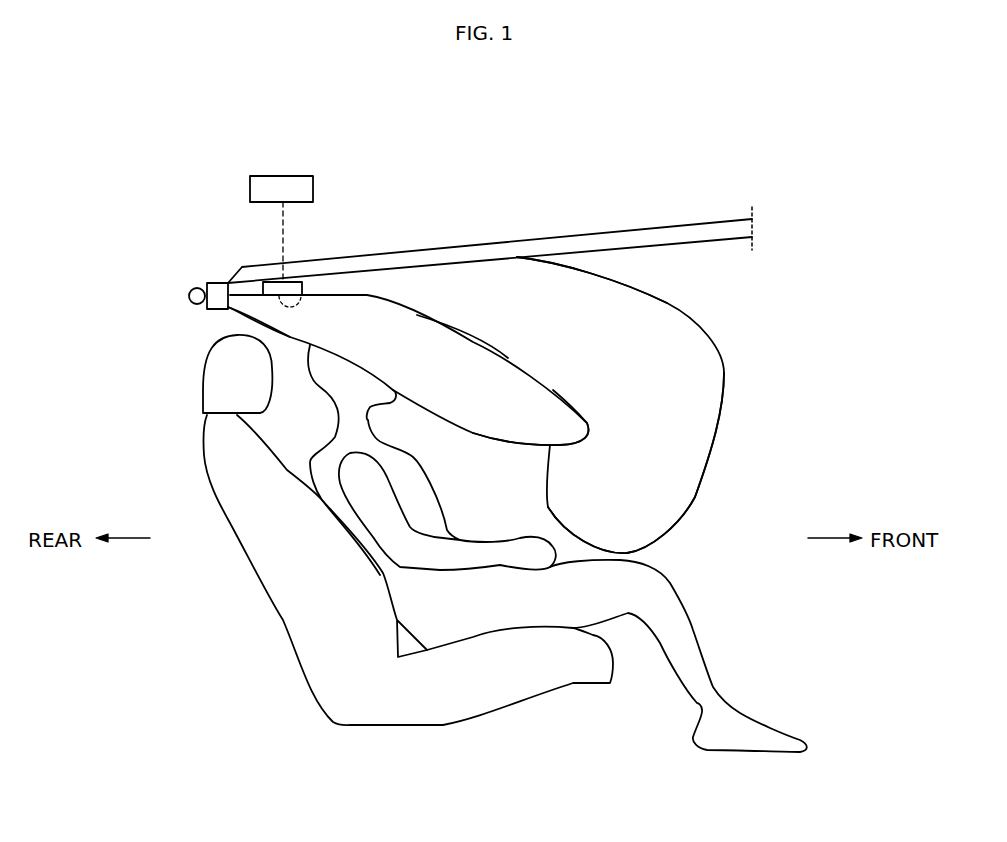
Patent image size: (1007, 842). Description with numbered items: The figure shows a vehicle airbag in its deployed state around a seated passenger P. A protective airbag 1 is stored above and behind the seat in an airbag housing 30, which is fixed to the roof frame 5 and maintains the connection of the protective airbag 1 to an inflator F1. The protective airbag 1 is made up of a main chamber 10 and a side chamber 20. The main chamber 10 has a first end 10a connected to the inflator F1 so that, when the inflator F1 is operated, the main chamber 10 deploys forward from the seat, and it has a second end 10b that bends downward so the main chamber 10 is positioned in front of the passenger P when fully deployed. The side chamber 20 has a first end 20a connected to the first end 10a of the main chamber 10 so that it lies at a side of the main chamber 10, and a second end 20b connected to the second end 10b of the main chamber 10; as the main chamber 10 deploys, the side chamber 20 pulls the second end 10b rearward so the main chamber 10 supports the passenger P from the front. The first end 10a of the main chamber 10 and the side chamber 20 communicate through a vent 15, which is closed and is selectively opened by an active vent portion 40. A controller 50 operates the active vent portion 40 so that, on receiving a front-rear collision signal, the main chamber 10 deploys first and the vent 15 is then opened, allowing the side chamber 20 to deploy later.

The protective airbag 1 is at (622, 272).
The roof frame 5 is at (533, 250).
The main chamber 10 is at (655, 330).
The first end of the main chamber 10a is at (340, 287).
The second end of the main chamber 10b is at (683, 497).
The vent 15 is at (315, 295).
The side chamber 20 is at (412, 343).
The first end of the side chamber 20a is at (250, 303).
The second end of the side chamber 20b is at (557, 412).
The airbag housing 30 is at (205, 283).
The active vent portion 40 is at (270, 281).
The controller 50 is at (280, 177).
The inflator F1 is at (189, 294).
The passenger P is at (420, 597).